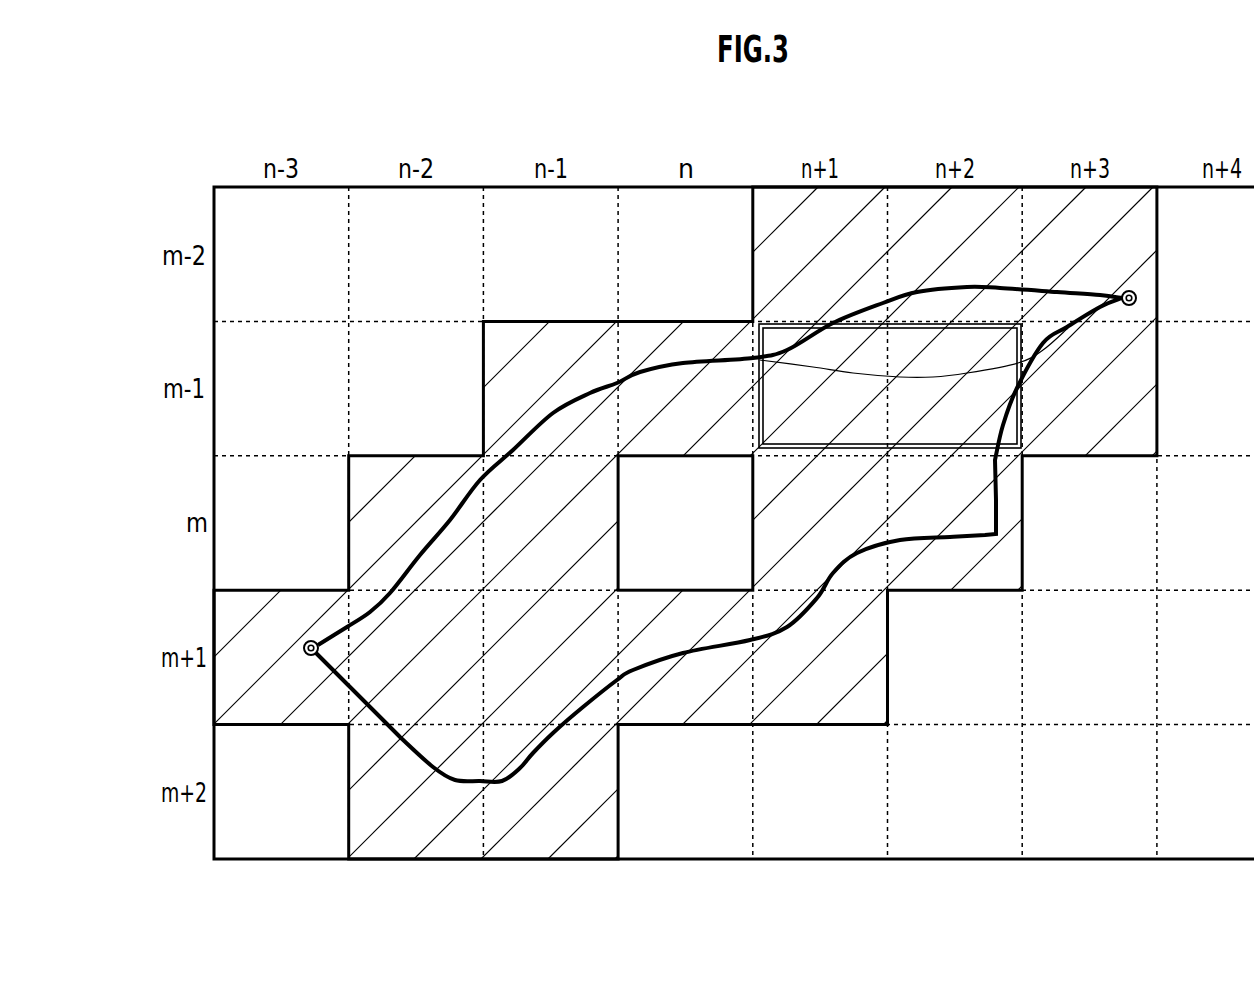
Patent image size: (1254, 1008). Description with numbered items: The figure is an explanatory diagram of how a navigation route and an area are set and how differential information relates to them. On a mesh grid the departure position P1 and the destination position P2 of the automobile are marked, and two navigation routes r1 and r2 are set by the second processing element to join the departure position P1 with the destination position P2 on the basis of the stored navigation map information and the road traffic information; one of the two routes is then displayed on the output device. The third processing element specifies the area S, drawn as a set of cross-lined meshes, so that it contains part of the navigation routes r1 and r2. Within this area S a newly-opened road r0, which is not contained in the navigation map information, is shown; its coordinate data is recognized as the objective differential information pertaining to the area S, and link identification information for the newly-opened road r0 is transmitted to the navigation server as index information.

The newly-opened road r0 is at (823, 364).
The navigation route r1 is at (511, 449).
The navigation route r2 is at (583, 717).
The departure position P1 is at (308, 639).
The destination position P2 is at (1142, 291).
The area S is at (406, 844).